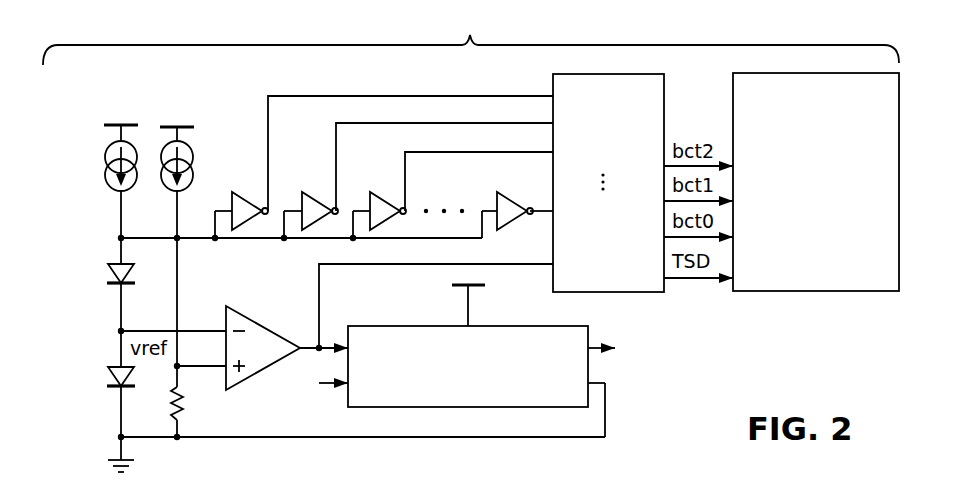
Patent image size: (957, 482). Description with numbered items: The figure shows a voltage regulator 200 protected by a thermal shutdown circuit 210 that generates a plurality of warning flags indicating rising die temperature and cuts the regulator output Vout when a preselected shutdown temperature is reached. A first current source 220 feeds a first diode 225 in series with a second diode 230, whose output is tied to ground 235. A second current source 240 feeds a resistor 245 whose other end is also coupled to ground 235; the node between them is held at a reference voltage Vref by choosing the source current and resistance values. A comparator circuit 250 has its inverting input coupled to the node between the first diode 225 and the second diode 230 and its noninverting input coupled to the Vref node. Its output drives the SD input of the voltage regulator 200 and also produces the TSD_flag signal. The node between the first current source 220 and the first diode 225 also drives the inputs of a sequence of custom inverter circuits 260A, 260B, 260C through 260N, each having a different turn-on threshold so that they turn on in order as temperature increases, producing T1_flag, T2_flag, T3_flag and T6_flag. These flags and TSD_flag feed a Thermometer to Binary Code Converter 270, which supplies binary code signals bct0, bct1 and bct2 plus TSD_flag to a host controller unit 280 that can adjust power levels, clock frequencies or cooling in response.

The voltage regulator 200 is at (503, 326).
The thermal shutdown circuit 210 is at (471, 34).
The first current source 220 is at (106, 148).
The first diode 225 is at (108, 268).
The second diode 230 is at (108, 371).
The ground 235 is at (121, 455).
The second current source 240 is at (189, 146).
The resistor 245 is at (184, 406).
The comparator circuit 250 is at (270, 324).
The first inverter circuit 260A is at (254, 184).
The second inverter circuit 260B is at (324, 184).
The third inverter circuit 260C is at (392, 184).
The sixth inverter circuit 260N is at (519, 184).
The Thermometer to Binary Code Converter 270 is at (623, 292).
The host controller unit 280 is at (855, 291).